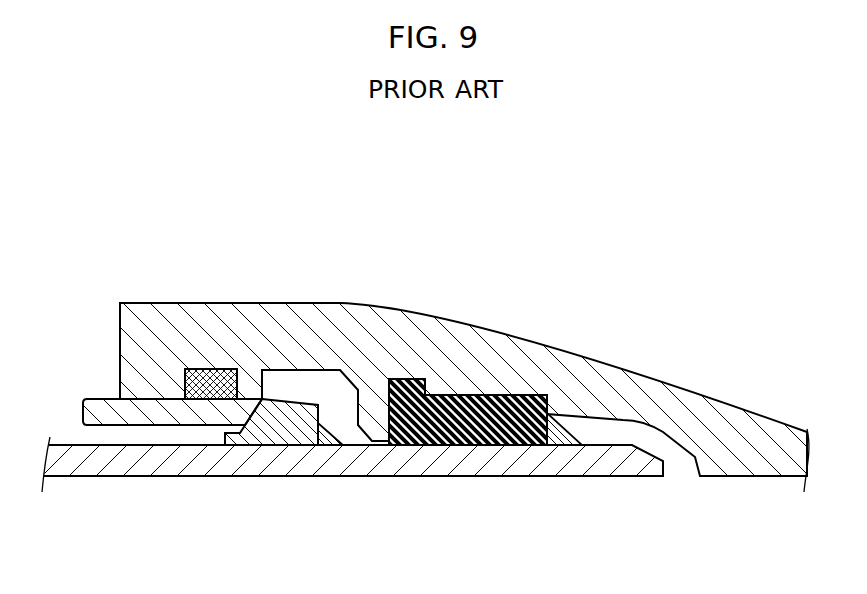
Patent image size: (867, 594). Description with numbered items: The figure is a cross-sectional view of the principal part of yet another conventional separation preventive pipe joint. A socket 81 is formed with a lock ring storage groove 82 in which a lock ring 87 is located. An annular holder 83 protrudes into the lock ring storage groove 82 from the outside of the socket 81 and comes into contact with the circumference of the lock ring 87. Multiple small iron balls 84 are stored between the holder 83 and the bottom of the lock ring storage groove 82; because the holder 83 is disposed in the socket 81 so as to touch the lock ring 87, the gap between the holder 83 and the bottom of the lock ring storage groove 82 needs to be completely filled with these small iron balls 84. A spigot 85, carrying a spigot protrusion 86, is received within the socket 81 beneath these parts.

The socket 81 is at (343, 323).
The lock ring storage groove 82 is at (284, 383).
The annular holder 83 is at (92, 407).
The small iron balls 84 is at (229, 369).
The spigot 85 is at (592, 460).
The spigot protrusion 86 is at (330, 422).
The lock ring 87 is at (297, 412).